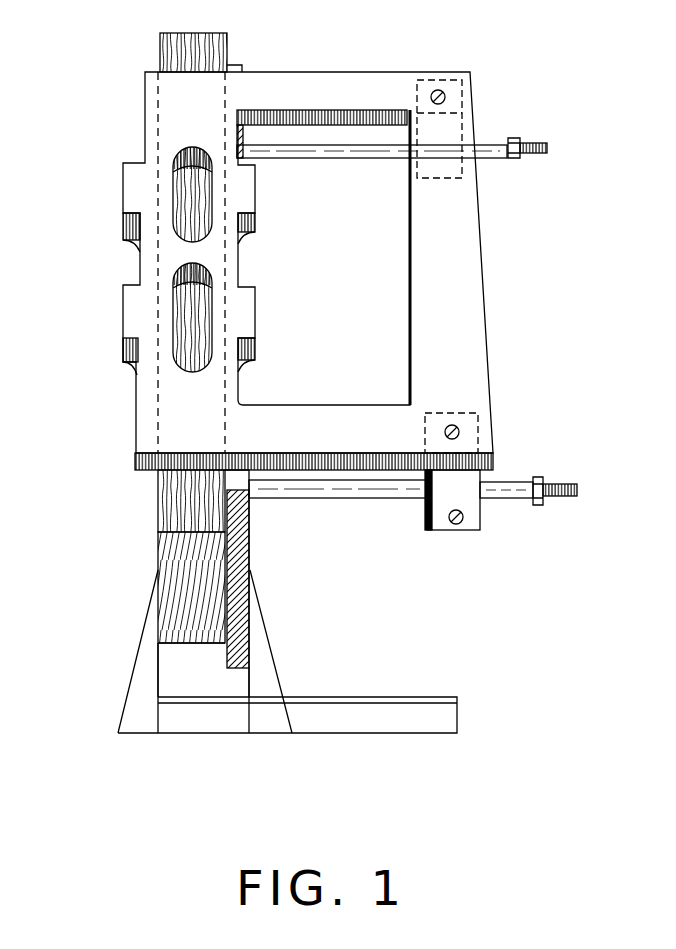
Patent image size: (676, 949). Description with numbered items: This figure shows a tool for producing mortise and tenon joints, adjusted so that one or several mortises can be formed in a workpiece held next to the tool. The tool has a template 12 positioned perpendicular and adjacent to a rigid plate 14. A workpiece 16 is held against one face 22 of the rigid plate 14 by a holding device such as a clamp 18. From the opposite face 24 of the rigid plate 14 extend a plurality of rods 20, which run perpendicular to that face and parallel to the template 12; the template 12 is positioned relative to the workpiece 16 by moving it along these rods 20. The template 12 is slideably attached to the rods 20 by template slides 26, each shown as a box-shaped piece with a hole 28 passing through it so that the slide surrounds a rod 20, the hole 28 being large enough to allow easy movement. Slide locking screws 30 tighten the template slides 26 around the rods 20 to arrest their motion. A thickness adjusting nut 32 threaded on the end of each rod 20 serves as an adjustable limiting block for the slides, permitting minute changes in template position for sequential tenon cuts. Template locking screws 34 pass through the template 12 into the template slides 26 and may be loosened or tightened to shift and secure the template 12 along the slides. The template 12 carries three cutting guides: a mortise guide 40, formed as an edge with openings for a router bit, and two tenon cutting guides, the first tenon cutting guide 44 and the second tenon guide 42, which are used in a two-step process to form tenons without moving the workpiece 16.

The template 12 is at (145, 420).
The rigid plate 14 is at (240, 70).
The workpiece 16 is at (180, 553).
The clamp 18 is at (350, 706).
The rods 20 is at (345, 152).
The face 22 is at (227, 652).
The face 24 is at (249, 556).
The template slide 26 is at (463, 125).
The hole 28 is at (425, 500).
The slide locking screw 30 is at (458, 524).
The thickness adjusting nut 32 is at (520, 160).
The template locking screw 34 is at (431, 93).
The mortise guide 40 is at (196, 147).
The second tenon guide 42 is at (122, 307).
The first tenon cutting guide 44 is at (255, 315).